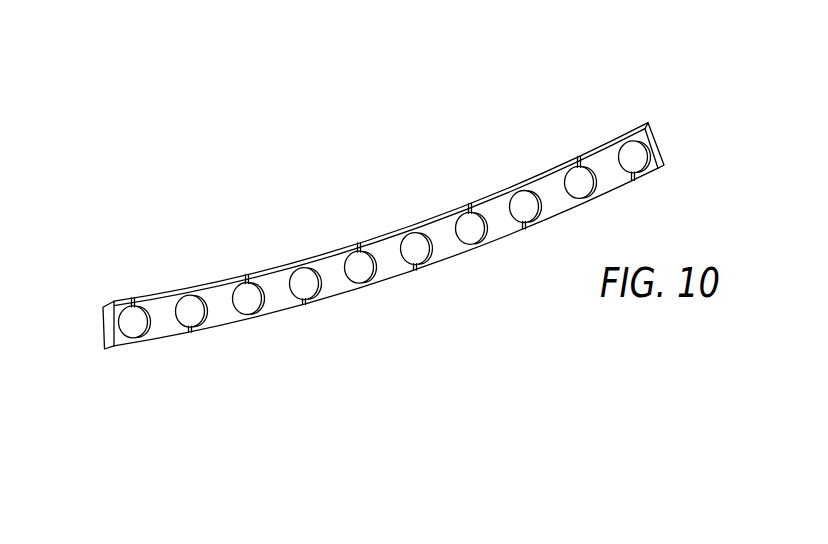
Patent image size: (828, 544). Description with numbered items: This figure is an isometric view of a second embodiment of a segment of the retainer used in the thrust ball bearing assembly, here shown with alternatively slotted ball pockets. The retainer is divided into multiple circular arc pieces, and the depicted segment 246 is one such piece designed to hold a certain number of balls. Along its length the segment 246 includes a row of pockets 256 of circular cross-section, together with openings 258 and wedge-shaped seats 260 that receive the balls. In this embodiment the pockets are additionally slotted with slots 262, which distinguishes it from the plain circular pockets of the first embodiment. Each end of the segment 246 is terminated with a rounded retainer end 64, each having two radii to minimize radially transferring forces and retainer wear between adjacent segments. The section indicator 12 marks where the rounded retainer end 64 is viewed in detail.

The section line 12- 12 is at (95, 368).
The rounded retainer end 64 is at (103, 320).
The retainer segment 246 is at (385, 232).
The pocket 256 is at (246, 300).
The opening 258 is at (519, 216).
The wedge-shaped seat 260 is at (460, 236).
The slot 262 is at (132, 302).